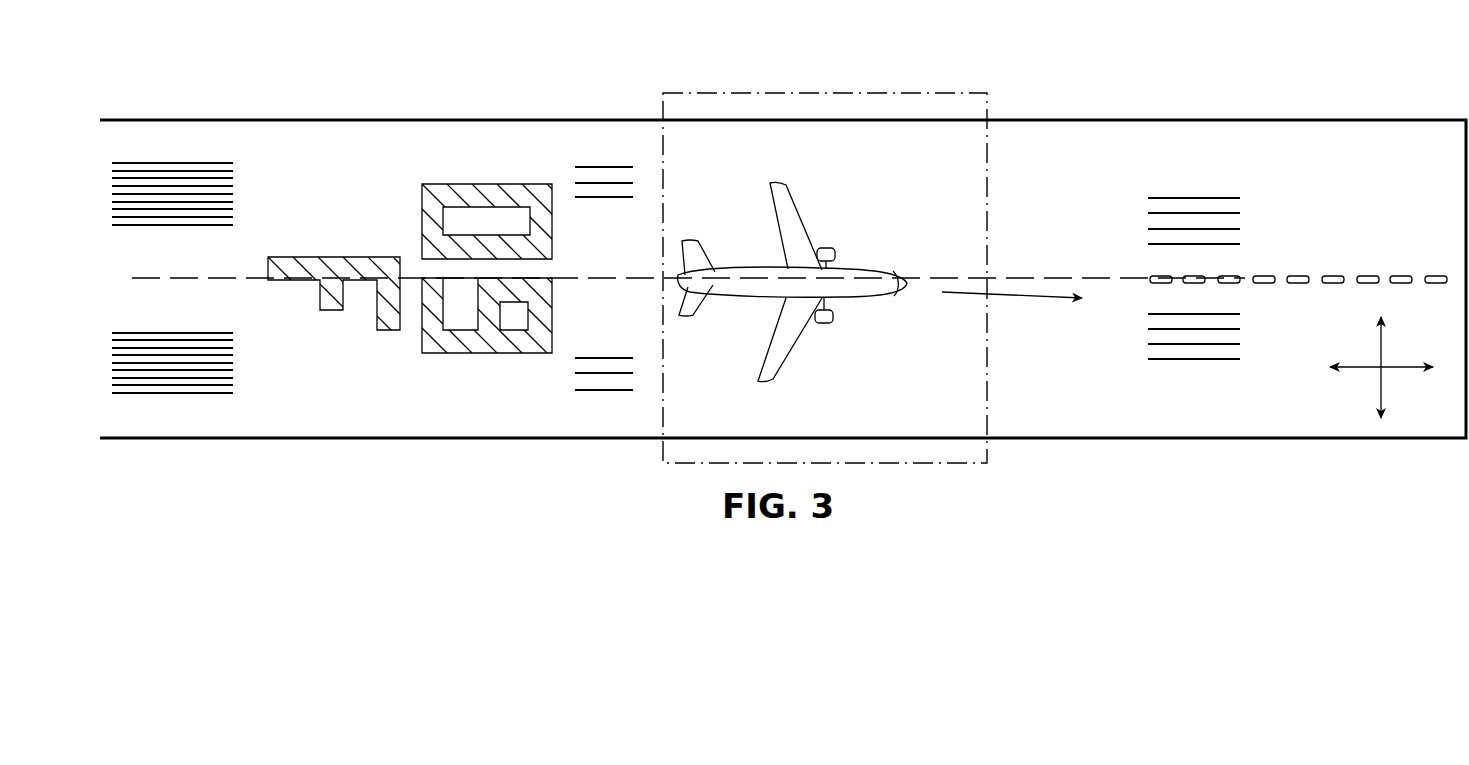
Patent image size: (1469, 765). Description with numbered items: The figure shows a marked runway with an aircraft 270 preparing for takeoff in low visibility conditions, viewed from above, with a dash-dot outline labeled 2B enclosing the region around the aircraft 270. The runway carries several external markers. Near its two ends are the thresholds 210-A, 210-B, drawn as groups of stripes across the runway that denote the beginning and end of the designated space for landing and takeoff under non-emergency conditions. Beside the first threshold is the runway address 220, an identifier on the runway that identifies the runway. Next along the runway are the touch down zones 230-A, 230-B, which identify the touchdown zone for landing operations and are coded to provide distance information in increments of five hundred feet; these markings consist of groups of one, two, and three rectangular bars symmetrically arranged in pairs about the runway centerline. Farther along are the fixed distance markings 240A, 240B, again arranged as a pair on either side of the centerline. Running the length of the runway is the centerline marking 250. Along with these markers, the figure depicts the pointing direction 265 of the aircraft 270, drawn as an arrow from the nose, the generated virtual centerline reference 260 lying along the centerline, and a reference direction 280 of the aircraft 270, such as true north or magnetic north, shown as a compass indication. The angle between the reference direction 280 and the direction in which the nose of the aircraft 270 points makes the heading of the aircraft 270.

The detail region of runway shown in FIG. 2B is at (916, 95).
The threshold 210-A is at (184, 150).
The threshold 210-B is at (207, 404).
The runway address 220 is at (408, 213).
The touch down zone 230-A is at (600, 158).
The touch down zone 230-B is at (614, 407).
The fixed distance marking 240A is at (1197, 188).
The fixed distance marking 240B is at (1181, 368).
The centerline marking 250 is at (1338, 272).
The generated centerline reference 260 is at (1250, 270).
The pointing direction 265 is at (1030, 280).
The aircraft 270 is at (893, 258).
The reference direction 280 is at (1358, 393).